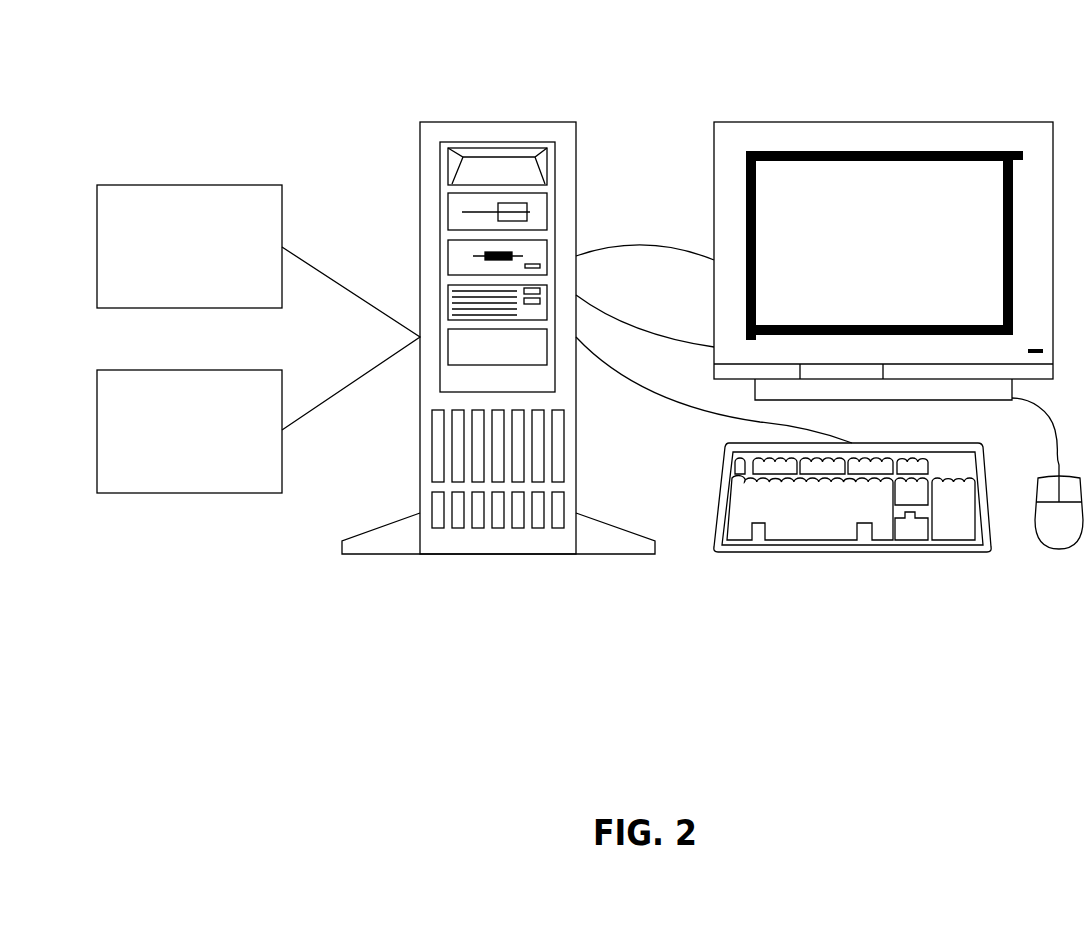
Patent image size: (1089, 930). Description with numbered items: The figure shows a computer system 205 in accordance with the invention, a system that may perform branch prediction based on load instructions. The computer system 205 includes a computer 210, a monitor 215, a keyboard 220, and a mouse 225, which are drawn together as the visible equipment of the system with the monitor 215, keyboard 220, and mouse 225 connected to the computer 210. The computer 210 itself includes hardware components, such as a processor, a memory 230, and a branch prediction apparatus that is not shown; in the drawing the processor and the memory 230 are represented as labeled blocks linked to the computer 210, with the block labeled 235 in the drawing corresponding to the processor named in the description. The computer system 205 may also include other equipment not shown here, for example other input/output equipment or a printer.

The computer system 205 is at (333, 52).
The computer 210 is at (470, 122).
The monitor 215 is at (762, 121).
The keyboard 220 is at (765, 553).
The mouse 225 is at (1060, 550).
The memory 230 is at (145, 183).
The memory 235 is at (145, 368).